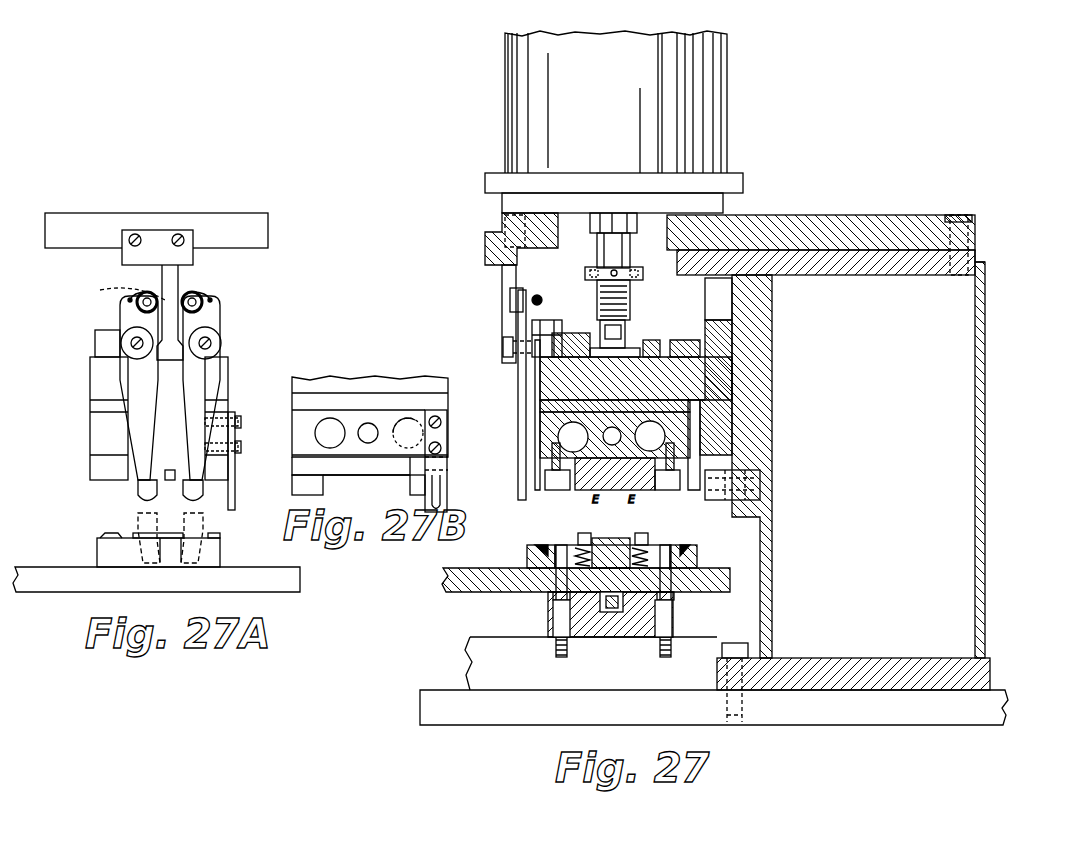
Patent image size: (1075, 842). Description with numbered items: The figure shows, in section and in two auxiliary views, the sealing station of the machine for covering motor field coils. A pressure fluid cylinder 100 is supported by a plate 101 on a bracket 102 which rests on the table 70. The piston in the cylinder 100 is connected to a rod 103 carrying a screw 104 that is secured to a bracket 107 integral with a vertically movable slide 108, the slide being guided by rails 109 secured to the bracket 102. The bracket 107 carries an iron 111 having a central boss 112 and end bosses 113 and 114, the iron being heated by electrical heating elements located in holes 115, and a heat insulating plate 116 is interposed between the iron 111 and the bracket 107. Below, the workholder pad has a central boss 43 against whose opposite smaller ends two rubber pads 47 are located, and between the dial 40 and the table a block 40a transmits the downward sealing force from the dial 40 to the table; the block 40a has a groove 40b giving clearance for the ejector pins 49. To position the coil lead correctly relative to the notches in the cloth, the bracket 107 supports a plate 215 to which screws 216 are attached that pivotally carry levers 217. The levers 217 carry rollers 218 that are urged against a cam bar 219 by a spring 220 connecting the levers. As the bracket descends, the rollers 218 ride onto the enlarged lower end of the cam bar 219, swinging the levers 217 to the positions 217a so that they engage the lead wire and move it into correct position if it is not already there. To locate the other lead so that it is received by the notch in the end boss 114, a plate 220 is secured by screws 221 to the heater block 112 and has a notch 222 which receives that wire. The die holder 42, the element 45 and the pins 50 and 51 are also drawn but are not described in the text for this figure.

In FIG. 27, the pressure fluid cylinder 100 is at (727, 93).
In FIG. 27, the plate 101 is at (853, 215).
In FIG. 27A, the plate 101 is at (170, 213).
In FIG. 27, the bracket 102 is at (985, 262).
In FIG. 27, the rod 103 is at (630, 252).
In FIG. 27, the screw 104 is at (630, 295).
In FIG. 27, the bracket 107 is at (690, 357).
In FIG. 27, the vertically movable slide 108 is at (720, 385).
In FIG. 27, the rails 109 is at (730, 485).
In FIG. 27, the iron 111 is at (700, 440).
In FIG. 27, the central boss 112 is at (612, 458).
In FIG. 27B, the central boss 112 is at (352, 470).
In FIG. 27, the end boss 113 is at (555, 490).
In FIG. 27, the end boss 114 is at (675, 490).
In FIG. 27, the holes 115 is at (580, 440).
In FIG. 27B, the holes 115 is at (325, 418).
In FIG. 27, the heat insulating plate 116 is at (690, 408).
In FIG. 27, the dial 40 is at (487, 592).
In FIG. 27A, the dial 40 is at (285, 592).
In FIG. 27, the block 40a is at (548, 618).
In FIG. 27, the groove 40b is at (620, 606).
In FIG. 27, the die holder 42 is at (697, 560).
In FIG. 27A, the die holder 42 is at (220, 553).
In FIG. 27, the central boss 43 is at (612, 538).
In FIG. 27A, the die 45 is at (100, 543).
In FIG. 27, the rubber pad 47 is at (540, 543).
In FIG. 27, the ejector pins 49 is at (608, 608).
In FIG. 27, the spring pin 50 is at (565, 545).
In FIG. 27, the spring pin 51 is at (652, 542).
In FIG. 27, the table 70 is at (995, 707).
In FIG. 27, the plate 215 is at (557, 320).
In FIG. 27A, the plate 215 is at (95, 342).
In FIG. 27, the screws 216 is at (503, 346).
In FIG. 27A, the screws 216 is at (130, 343).
In FIG. 27, the levers 217 is at (518, 383).
In FIG. 27A, the levers 217 is at (128, 385).
In FIG. 27A, the lever positions 217a is at (138, 518).
In FIG. 27, the rollers 218 is at (510, 308).
In FIG. 27A, the rollers 218 is at (137, 305).
In FIG. 27, the cam bar 219 is at (502, 280).
In FIG. 27A, the cam bar 219 is at (162, 278).
In FIG. 27, the spring 220 is at (537, 296).
In FIG. 27A, the spring 220 is at (245, 467).
In FIG. 27B, the spring 220 is at (447, 437).
In FIG. 27A, the screws 221 is at (241, 426).
In FIG. 27B, the screws 221 is at (441, 422).
In FIG. 27B, the notch 222 is at (440, 505).